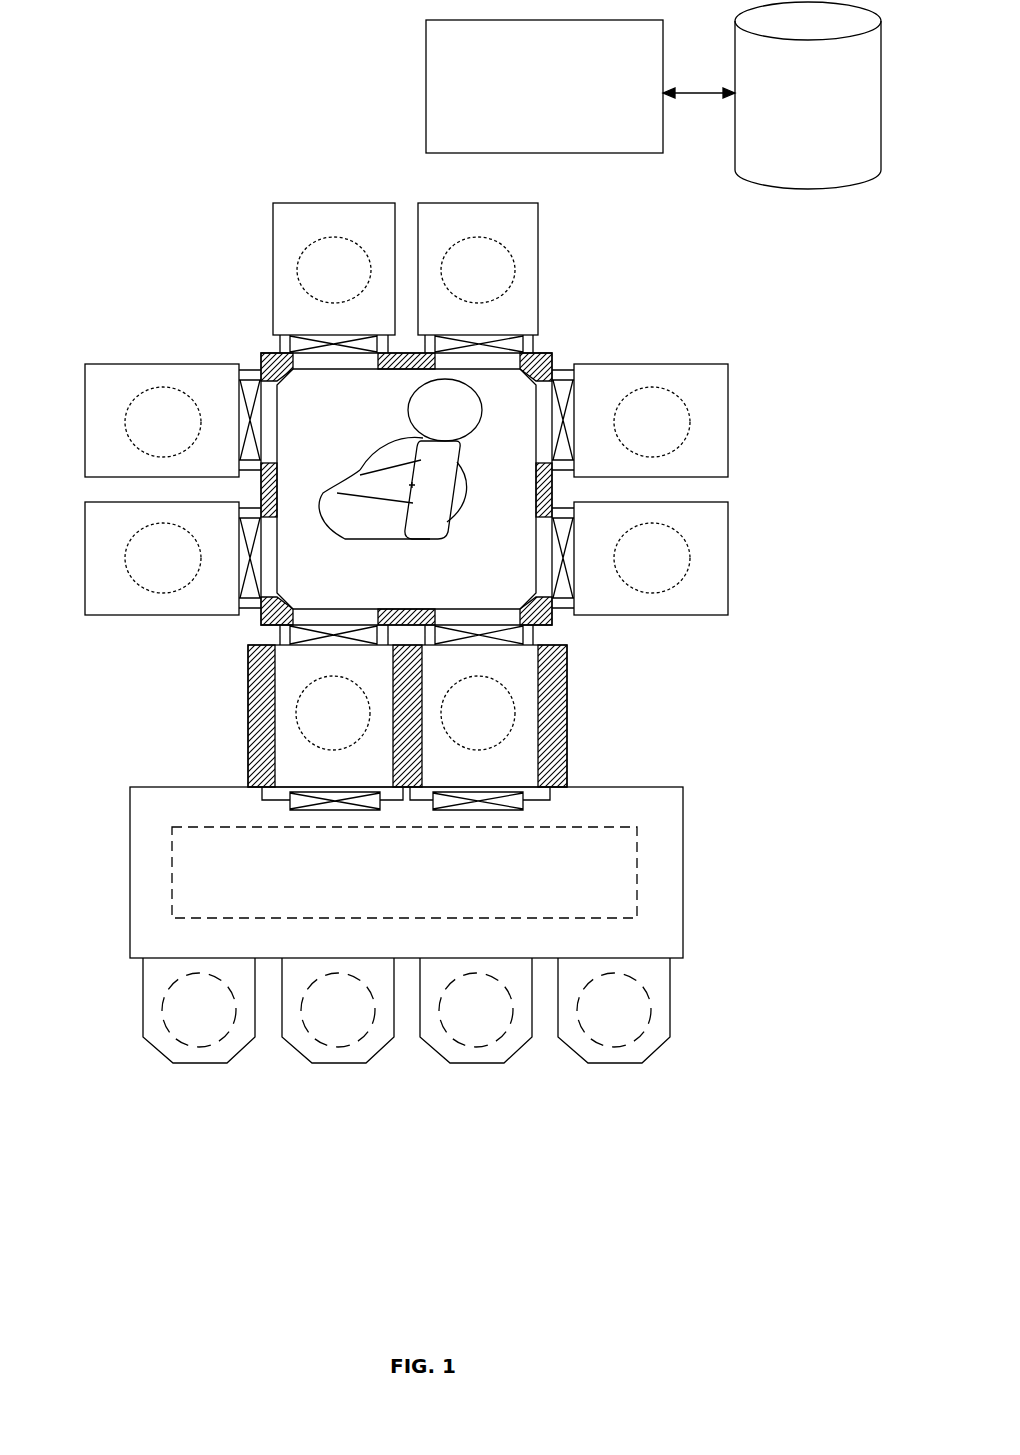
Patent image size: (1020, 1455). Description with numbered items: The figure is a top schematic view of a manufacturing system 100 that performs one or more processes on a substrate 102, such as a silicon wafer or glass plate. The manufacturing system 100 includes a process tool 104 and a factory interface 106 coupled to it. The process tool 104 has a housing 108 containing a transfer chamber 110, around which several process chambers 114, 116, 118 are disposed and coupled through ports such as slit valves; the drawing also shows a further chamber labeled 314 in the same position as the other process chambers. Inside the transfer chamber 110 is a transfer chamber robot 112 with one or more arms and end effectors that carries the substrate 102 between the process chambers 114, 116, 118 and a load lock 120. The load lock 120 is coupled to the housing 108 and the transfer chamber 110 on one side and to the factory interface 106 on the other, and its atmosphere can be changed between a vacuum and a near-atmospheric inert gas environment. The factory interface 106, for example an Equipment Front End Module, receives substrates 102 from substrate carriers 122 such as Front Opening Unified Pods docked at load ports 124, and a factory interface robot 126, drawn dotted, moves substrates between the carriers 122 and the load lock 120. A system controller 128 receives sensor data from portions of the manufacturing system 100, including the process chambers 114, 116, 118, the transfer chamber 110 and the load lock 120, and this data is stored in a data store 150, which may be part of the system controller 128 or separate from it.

The manufacturing system 100 is at (170, 238).
The substrate 102 is at (427, 421).
The process tool 104 is at (568, 338).
The factory interface 106 is at (119, 866).
The housing 108 is at (552, 622).
The transfer chamber 110 is at (390, 584).
The transfer chamber robot 112 is at (388, 430).
The process chamber 114 is at (651, 420).
The process chamber 116 is at (405, 269).
The process chamber 118 is at (162, 489).
The load lock 120 is at (244, 697).
The substrate carrier 122 is at (200, 1063).
The load port 124 is at (170, 962).
The factory interface robot 126 is at (637, 863).
The system controller 128 is at (646, 115).
The data store 150 is at (862, 119).
The processing chamber 314 is at (651, 558).